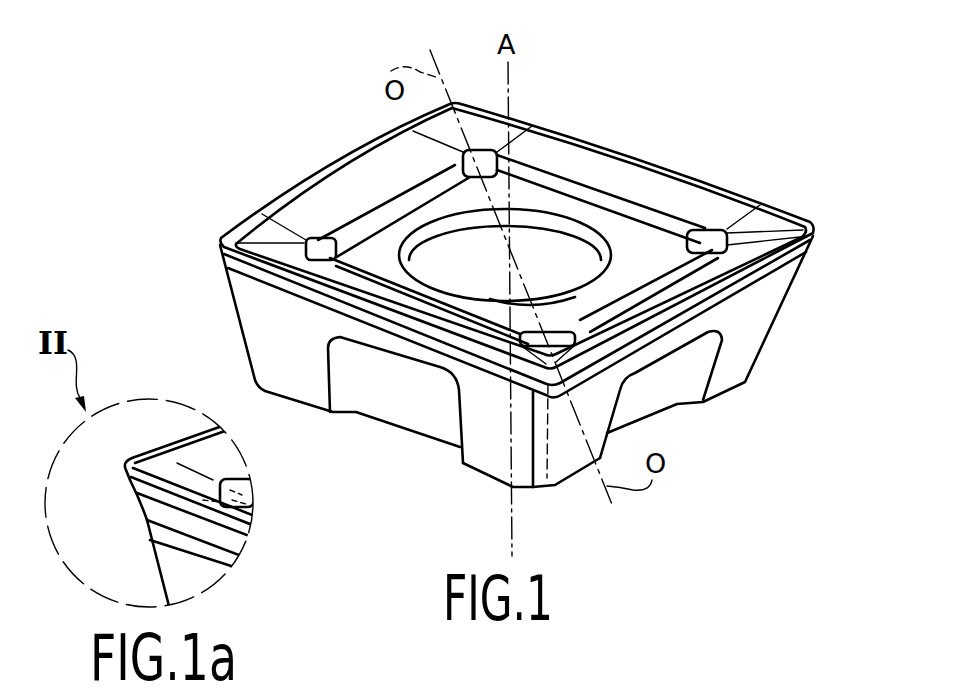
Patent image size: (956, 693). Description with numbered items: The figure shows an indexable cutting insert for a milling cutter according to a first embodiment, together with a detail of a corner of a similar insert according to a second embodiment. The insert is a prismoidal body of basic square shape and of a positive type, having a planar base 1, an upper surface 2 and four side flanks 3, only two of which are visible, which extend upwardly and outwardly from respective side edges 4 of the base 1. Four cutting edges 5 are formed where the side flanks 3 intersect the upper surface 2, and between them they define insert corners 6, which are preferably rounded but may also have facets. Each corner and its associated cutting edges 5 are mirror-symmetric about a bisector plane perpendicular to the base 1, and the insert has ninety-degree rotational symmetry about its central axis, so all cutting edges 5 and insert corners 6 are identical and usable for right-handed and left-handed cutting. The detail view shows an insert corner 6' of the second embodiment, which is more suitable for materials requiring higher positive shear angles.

In FIG. 1, the planar base 1 is at (560, 86).
In FIG. 1, the upper surface 2 is at (575, 145).
In FIG. 1, the side flanks 3 is at (767, 312).
In FIG. 1, the side edges 4 is at (300, 405).
In FIG. 1, the cutting edges 5 is at (363, 147).
In FIG. 1, the insert corners 6 is at (512, 223).
In FIG. 1a, the insert corners 6' is at (162, 517).